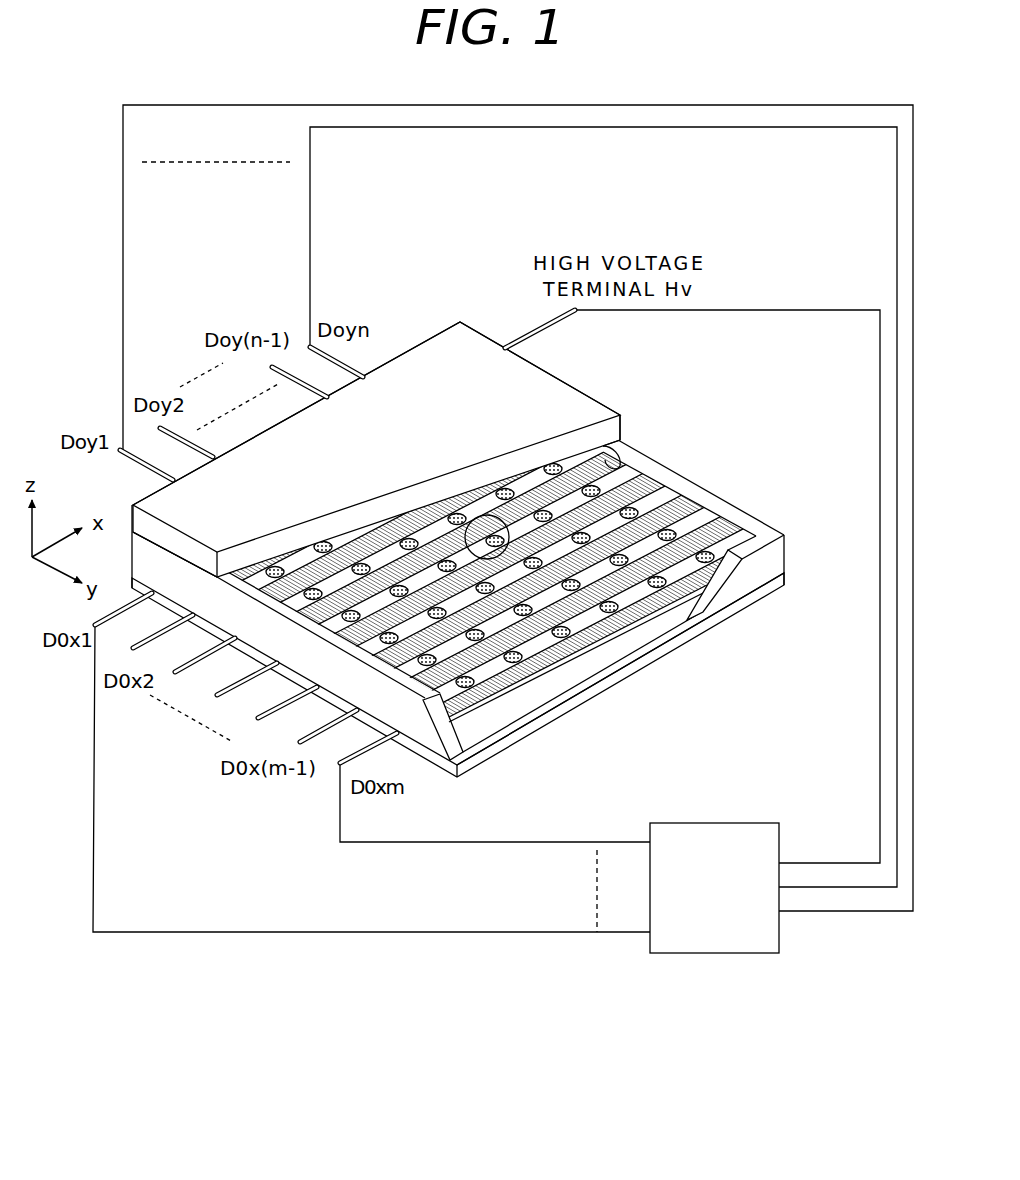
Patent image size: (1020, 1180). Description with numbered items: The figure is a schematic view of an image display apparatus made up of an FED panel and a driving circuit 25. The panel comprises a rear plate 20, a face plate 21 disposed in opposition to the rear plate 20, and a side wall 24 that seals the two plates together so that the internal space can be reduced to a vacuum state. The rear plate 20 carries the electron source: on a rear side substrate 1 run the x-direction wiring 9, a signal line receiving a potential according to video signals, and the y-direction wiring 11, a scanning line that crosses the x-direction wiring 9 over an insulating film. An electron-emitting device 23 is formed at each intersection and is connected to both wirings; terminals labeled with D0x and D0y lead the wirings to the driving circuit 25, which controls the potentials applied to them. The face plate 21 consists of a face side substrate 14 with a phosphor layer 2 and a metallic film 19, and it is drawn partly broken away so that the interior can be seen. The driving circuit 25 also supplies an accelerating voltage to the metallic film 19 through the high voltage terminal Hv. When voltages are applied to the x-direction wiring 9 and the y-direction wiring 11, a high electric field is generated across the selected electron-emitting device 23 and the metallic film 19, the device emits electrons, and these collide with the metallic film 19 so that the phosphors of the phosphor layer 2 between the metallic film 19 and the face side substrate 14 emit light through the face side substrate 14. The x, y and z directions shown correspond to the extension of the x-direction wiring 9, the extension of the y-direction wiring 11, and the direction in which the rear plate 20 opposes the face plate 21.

The rear side substrate 1 is at (780, 588).
The phosphor layer 2 is at (421, 417).
The x-direction wiring 9 is at (560, 647).
The y-direction wiring 11 is at (602, 543).
The face side substrate 14 is at (622, 428).
The metallic film 19 is at (615, 462).
The rear plate 20 is at (513, 757).
The face plate 21 is at (425, 348).
The electron-emitting device 23 is at (473, 513).
The side wall 24 is at (777, 563).
The driving circuit 25 is at (713, 954).